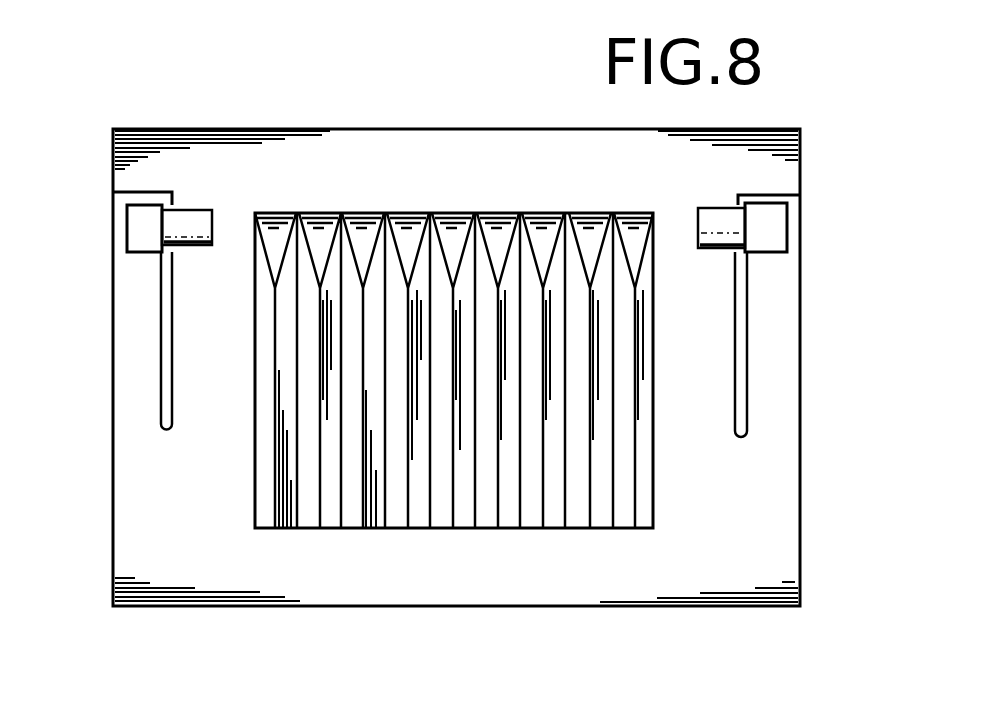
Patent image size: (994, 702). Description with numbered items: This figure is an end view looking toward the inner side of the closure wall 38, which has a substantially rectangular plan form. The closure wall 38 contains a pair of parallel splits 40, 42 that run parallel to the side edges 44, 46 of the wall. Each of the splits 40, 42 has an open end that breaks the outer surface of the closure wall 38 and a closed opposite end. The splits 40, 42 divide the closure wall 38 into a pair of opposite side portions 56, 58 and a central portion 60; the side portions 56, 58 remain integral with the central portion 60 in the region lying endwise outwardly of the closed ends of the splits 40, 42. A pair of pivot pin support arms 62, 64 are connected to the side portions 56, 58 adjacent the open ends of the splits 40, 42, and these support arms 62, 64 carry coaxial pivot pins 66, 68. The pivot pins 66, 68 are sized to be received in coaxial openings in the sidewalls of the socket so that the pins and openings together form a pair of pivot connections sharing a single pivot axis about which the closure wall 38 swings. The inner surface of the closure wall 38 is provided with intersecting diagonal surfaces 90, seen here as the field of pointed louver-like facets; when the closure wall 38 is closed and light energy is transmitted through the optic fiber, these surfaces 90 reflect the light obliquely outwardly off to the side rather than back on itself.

The closure wall 38 is at (270, 613).
The split 40 is at (163, 357).
The split 42 is at (735, 380).
The side edge 44 is at (112, 435).
The side edge 46 is at (802, 497).
The side portion 56 is at (130, 287).
The side portion 58 is at (785, 288).
The central portion 60 is at (463, 148).
The pivot pin support arm 62 is at (140, 222).
The pivot pin support arm 64 is at (775, 228).
The pivot pin 66 is at (203, 222).
The pivot pin 68 is at (722, 222).
The intersecting diagonal surfaces 90 is at (440, 530).